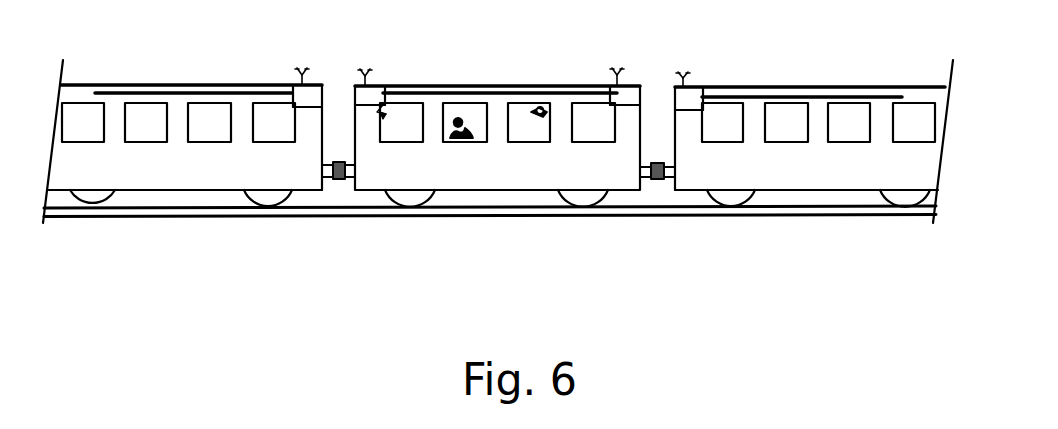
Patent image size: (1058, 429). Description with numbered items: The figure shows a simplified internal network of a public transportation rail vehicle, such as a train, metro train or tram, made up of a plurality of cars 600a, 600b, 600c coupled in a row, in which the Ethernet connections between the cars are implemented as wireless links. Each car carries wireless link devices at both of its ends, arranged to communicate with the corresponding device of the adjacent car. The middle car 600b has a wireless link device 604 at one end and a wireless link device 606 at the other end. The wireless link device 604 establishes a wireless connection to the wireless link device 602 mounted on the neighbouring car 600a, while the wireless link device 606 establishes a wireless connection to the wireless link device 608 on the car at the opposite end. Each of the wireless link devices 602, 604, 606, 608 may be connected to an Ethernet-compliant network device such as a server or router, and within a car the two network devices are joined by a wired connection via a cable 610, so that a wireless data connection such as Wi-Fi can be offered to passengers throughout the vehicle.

The car 600a is at (197, 173).
The car 600b is at (533, 185).
The car 600c is at (823, 177).
The wireless link device 602 is at (358, 60).
The wireless link device 604 is at (370, 93).
The wireless link device 606 is at (677, 59).
The wireless link device 608 is at (688, 94).
The cable 610 is at (500, 92).